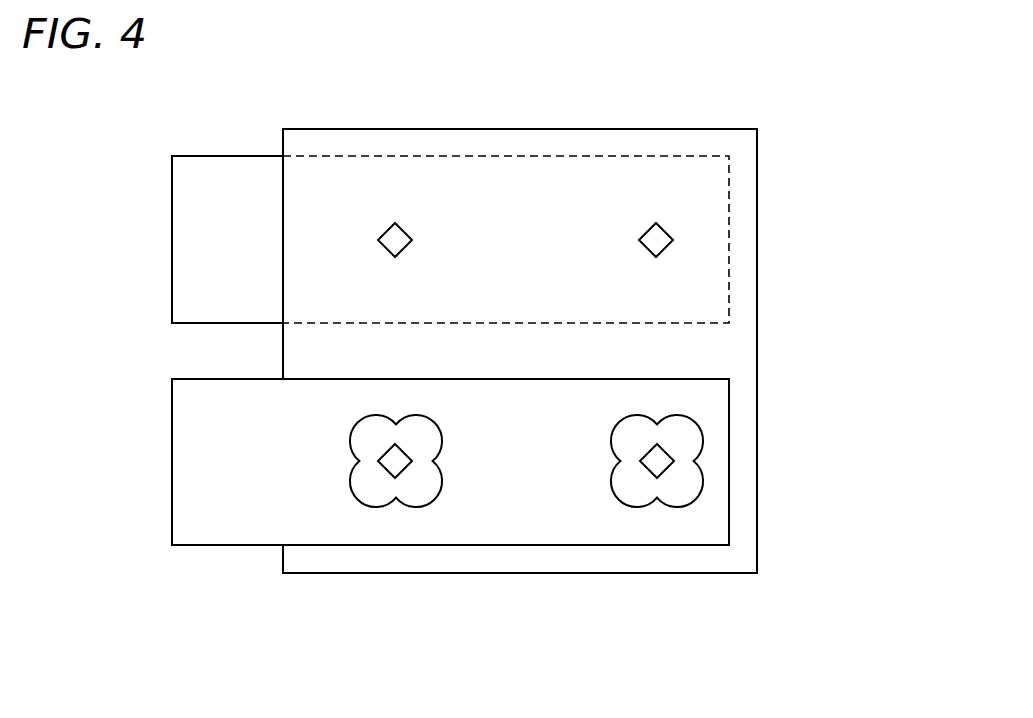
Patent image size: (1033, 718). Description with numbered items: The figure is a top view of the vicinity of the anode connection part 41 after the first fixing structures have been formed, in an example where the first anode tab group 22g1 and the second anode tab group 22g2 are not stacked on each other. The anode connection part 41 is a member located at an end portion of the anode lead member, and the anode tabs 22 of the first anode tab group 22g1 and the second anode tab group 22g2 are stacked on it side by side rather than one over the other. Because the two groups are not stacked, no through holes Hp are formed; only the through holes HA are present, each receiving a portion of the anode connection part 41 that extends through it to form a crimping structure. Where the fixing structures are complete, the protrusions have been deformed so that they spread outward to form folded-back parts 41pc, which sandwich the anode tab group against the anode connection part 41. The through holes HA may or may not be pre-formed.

The anode connection part 41 is at (748, 157).
The folded-back part 41pc is at (689, 438).
The anode tab 22 is at (450, 354).
The first anode tab group 22g1 is at (228, 162).
The second anode tab group 22g2 is at (228, 533).
The through hole HA is at (398, 227).